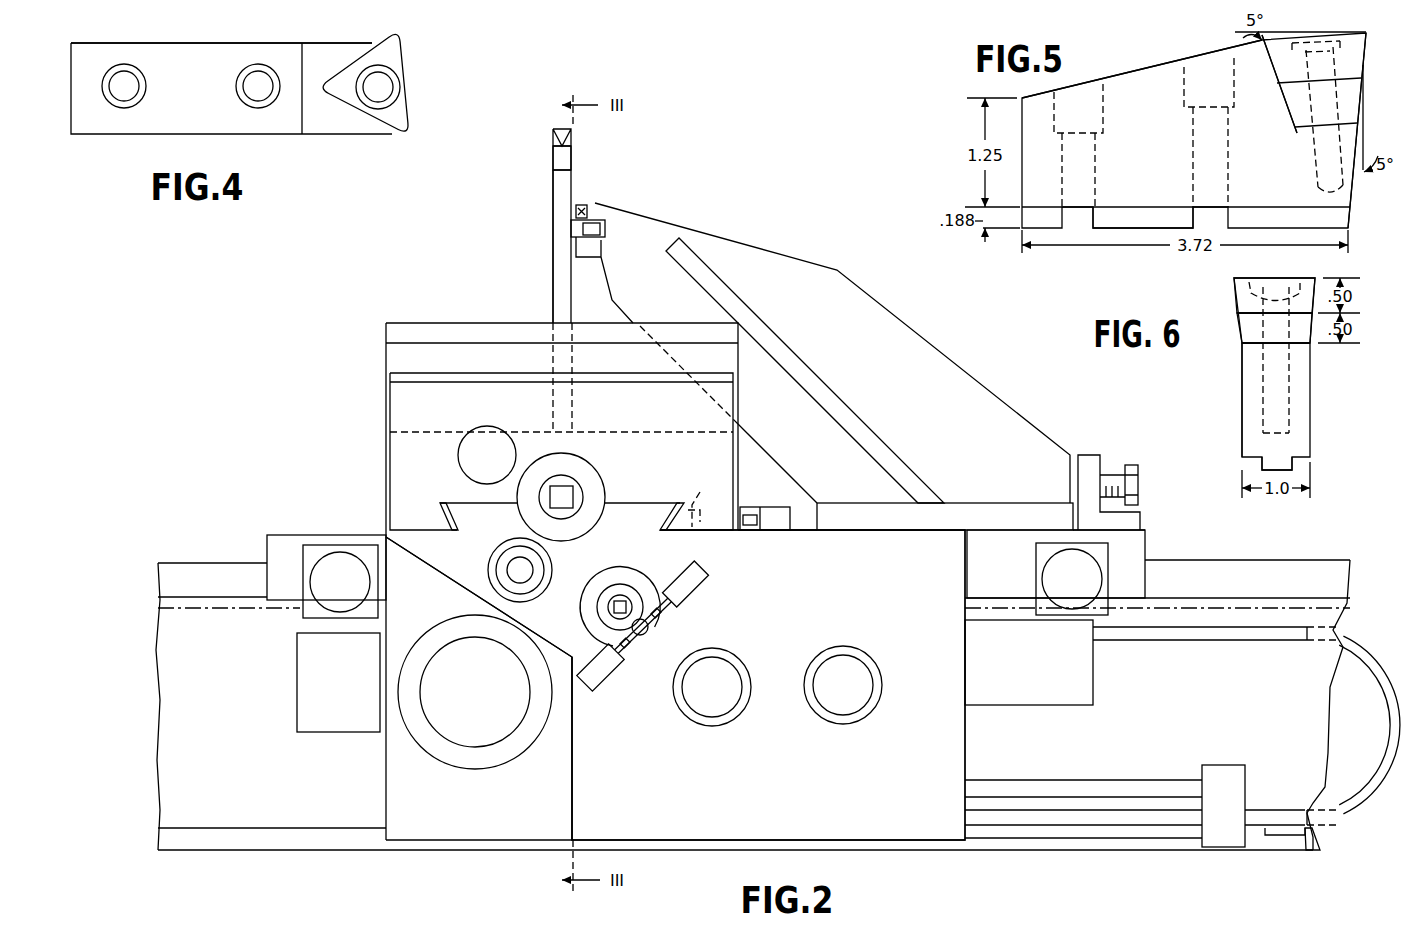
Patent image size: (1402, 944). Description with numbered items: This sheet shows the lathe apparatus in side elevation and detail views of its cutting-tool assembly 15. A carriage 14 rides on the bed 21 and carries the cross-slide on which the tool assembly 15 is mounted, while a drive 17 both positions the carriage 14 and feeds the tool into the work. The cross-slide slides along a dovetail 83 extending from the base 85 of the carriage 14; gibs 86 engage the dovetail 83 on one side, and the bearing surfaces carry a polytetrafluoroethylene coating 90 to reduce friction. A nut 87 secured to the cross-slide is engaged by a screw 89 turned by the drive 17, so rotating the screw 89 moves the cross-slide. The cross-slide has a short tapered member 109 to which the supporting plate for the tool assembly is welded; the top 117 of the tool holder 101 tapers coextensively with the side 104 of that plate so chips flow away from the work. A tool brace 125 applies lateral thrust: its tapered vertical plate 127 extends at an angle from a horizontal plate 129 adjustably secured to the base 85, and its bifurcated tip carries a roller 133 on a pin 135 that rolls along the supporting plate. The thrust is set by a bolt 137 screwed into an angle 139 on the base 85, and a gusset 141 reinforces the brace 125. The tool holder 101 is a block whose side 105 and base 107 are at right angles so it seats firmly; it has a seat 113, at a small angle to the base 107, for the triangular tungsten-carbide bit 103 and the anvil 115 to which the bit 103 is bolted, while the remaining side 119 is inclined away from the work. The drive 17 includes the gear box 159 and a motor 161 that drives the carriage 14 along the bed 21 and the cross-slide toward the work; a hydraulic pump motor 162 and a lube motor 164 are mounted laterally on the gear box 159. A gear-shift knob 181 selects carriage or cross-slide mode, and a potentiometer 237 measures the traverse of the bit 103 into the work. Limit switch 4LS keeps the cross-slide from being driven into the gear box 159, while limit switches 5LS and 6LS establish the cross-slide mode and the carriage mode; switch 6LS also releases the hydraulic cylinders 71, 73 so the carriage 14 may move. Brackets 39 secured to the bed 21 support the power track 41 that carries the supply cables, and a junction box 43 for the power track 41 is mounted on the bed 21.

In FIG. 2, the carriage 14 is at (384, 497).
In FIG. 2, the cutting-tool assembly 15 is at (511, 257).
In FIG. 2, the drive 17 is at (479, 688).
In FIG. 2, the bed 21 is at (1142, 849).
In FIG. 2, the pins or brackets 39 is at (1306, 846).
In FIG. 2, the power track 41 is at (1398, 713).
In FIG. 2, the junction box 43 is at (1223, 766).
In FIG. 2, the hydraulic cylinder 71 is at (322, 588).
In FIG. 2, the hydraulic cylinder 73 is at (1058, 585).
In FIG. 2, the dovetail 83 is at (640, 512).
In FIG. 2, the base 85 is at (460, 552).
In FIG. 2, the gibs 86 is at (705, 502).
In FIG. 2, the nut 87 is at (572, 489).
In FIG. 2, the screw 89 is at (566, 487).
In FIG. 2, the coating 90 is at (676, 533).
In FIG. 4, the tool holder 101 is at (168, 134).
In FIG. 5, the tool holder 101 is at (1133, 153).
In FIG. 6, the tool holder 101 is at (1318, 398).
In FIG. 2, the tool holder 101 is at (571, 157).
In FIG. 4, the bit 103 is at (412, 92).
In FIG. 5, the bit 103 is at (1270, 60).
In FIG. 6, the bit 103 is at (1243, 303).
In FIG. 2, the side of plate 104 is at (553, 208).
In FIG. 5, the side of tool holder 105 is at (1022, 150).
In FIG. 5, the base of tool holder 107 is at (1130, 212).
In FIG. 6, the base of tool holder 107 is at (1252, 463).
In FIG. 2, the short member 109 is at (466, 334).
In FIG. 5, the seat 113 is at (1298, 128).
In FIG. 6, the seat 113 is at (1252, 343).
In FIG. 5, the anvil 115 is at (1290, 110).
In FIG. 6, the anvil 115 is at (1247, 322).
In FIG. 4, the top of holder 117 is at (208, 124).
In FIG. 5, the top of holder 117 is at (1143, 70).
In FIG. 5, the remaining side 119 is at (1356, 192).
In FIG. 6, the remaining side 119 is at (1246, 408).
In FIG. 2, the tool brace 125 is at (832, 353).
In FIG. 2, the tapered vertical plate 127 is at (865, 290).
In FIG. 2, the horizontal plate 129 is at (1016, 512).
In FIG. 2, the roller 133 is at (603, 218).
In FIG. 2, the pin 135 is at (583, 205).
In FIG. 2, the bolt 137 is at (1137, 480).
In FIG. 2, the angle 139 is at (1092, 463).
In FIG. 2, the gusset 141 is at (852, 413).
In FIG. 2, the gear box 159 is at (730, 800).
In FIG. 2, the motor 161 is at (457, 703).
In FIG. 2, the hydraulic pump motor 162 is at (325, 712).
In FIG. 2, the lube motor 164 is at (1010, 670).
In FIG. 2, the gear-shift knob 181 is at (610, 601).
In FIG. 2, the potentiometer 237 is at (490, 573).
In FIG. 2, the limit switch 4LS is at (778, 522).
In FIG. 2, the limit switch 5LS is at (612, 668).
In FIG. 2, the limit switch 6LS is at (693, 589).